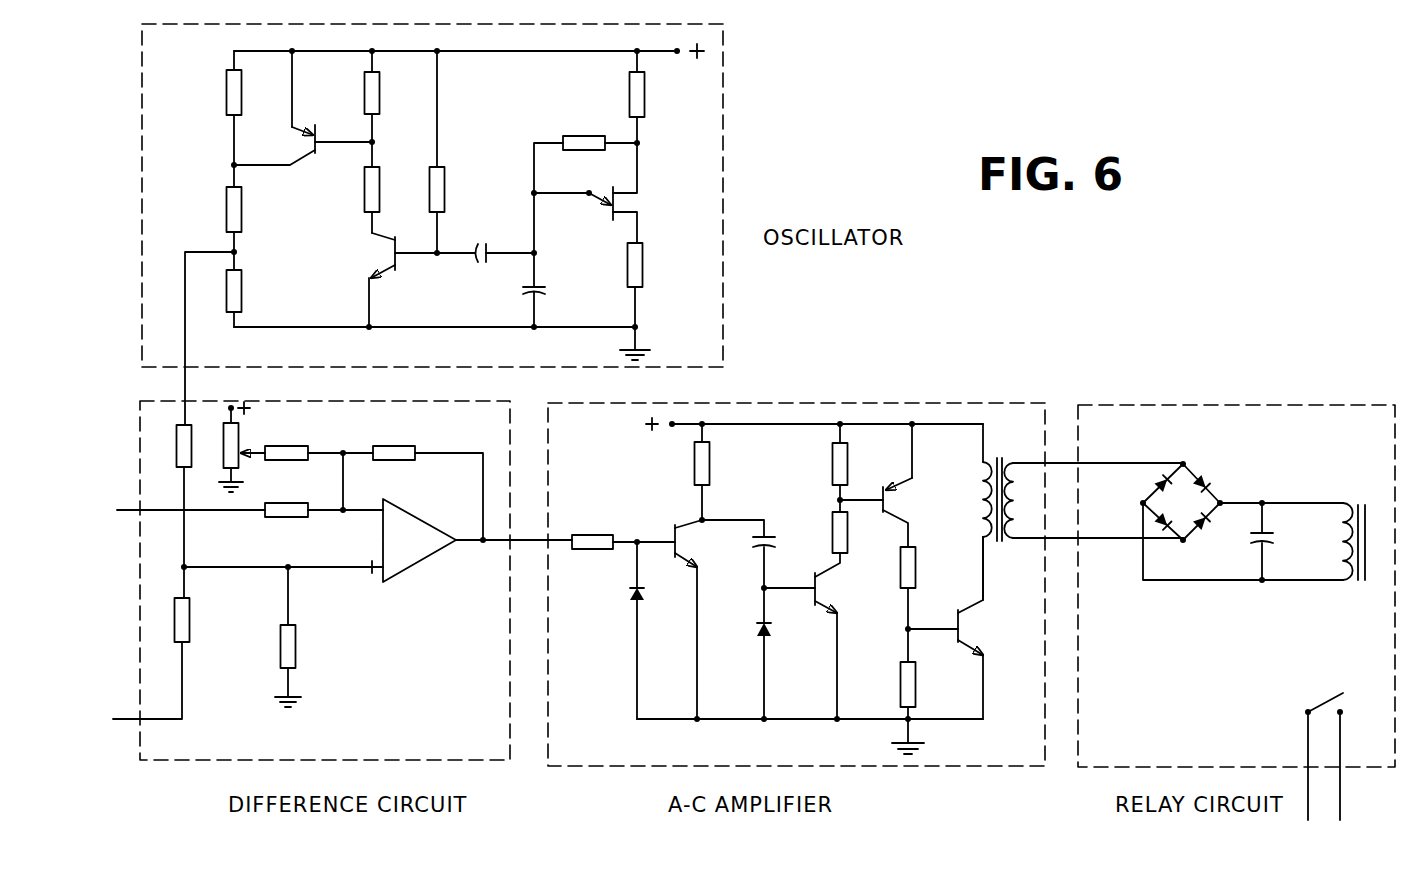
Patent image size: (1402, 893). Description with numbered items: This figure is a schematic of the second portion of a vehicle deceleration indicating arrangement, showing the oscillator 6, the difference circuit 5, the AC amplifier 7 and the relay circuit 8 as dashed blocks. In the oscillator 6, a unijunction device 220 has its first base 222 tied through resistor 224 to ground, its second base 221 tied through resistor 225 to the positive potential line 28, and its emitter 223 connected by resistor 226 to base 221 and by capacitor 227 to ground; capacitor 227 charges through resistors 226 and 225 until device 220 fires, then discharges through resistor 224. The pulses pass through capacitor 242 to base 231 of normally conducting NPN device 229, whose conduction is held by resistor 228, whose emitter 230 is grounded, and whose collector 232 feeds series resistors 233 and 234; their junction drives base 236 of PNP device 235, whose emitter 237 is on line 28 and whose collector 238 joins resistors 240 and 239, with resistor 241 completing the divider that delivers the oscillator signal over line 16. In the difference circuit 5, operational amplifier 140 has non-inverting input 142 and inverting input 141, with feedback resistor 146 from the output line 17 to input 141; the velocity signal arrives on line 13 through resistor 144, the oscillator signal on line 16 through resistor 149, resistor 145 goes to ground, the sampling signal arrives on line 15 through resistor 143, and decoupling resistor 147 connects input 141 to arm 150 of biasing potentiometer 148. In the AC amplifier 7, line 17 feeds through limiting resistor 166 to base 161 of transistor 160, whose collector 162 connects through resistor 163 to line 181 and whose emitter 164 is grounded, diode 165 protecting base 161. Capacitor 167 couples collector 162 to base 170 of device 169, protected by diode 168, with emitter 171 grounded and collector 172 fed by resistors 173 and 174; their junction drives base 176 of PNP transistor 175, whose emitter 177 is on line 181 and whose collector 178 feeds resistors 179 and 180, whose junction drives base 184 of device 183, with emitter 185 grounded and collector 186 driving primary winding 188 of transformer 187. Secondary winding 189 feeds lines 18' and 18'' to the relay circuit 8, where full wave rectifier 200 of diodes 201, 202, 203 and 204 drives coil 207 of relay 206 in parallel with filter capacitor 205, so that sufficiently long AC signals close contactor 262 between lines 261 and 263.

The difference circuit 5 is at (159, 762).
The oscillator 6 is at (726, 218).
The AC amplifier 7 is at (584, 772).
The relay circuit 8 is at (1105, 772).
The line 13 is at (116, 718).
The line 15 is at (118, 507).
The line 16 is at (191, 377).
The line 17 is at (528, 538).
The line 18' is at (1068, 443).
The line 18'' is at (1071, 565).
The line 28 is at (550, 51).
The operational amplifier 140 is at (428, 551).
The inverting input 141 is at (366, 525).
The non-inverting input 142 is at (354, 570).
The resistor 143 is at (278, 518).
The resistor 144 is at (192, 610).
The resistor 145 is at (302, 644).
The feedback resistor 146 is at (386, 444).
The decoupling resistor 147 is at (290, 451).
The potentiometer 148 is at (242, 432).
The resistor 149 is at (170, 434).
The arm 150 is at (256, 458).
The transistor 160 is at (724, 550).
The base 161 is at (672, 528).
The collector 162 is at (686, 524).
The resistor 163 is at (719, 468).
The emitter 164 is at (684, 596).
The diode 165 is at (626, 600).
The limiting resistor 166 is at (598, 548).
The capacitor 167 is at (758, 548).
The diode 168 is at (754, 638).
The transistor 169 is at (864, 604).
The base 170 is at (808, 578).
The emitter 171 is at (830, 608).
The collector 172 is at (828, 580).
The resistor 173 is at (832, 513).
The resistor 174 is at (832, 455).
The PNP transistor 175 is at (936, 510).
The base 176 is at (880, 488).
The emitter 177 is at (900, 482).
The collector 178 is at (898, 518).
The resistor 179 is at (916, 576).
The resistor 180 is at (900, 684).
The line 181 is at (810, 416).
The transistor 183 is at (1010, 640).
The base 184 is at (962, 646).
The emitter 185 is at (972, 652).
The collector 186 is at (968, 614).
The transformer 187 is at (1028, 455).
The primary winding 188 is at (982, 512).
The secondary winding 189 is at (1008, 540).
The full wave rectifier 200 is at (1174, 504).
The diode 201 is at (1156, 485).
The diode 202 is at (1153, 525).
The diode 203 is at (1208, 479).
The diode 204 is at (1206, 529).
The rectifier filter capacitor 205 is at (1276, 544).
The relay 206 is at (1376, 493).
The coil 207 is at (1342, 528).
The unijunction device 220 is at (678, 213).
The second base 221 is at (623, 186).
The first base 222 is at (618, 216).
The emitter 223 is at (594, 200).
The resistor 224 is at (644, 256).
The resistor 225 is at (646, 90).
The resistor 226 is at (576, 136).
The capacitor 227 is at (546, 292).
The resistor 228 is at (444, 178).
The NPN device 229 is at (384, 265).
The emitter 230 is at (384, 272).
The base 231 is at (402, 240).
The collector 232 is at (370, 239).
The resistor 233 is at (362, 200).
The resistor 234 is at (381, 90).
The PNP device 235 is at (315, 137).
The base 236 is at (308, 156).
The emitter 237 is at (302, 124).
The collector 238 is at (299, 168).
The resistor 239 is at (226, 103).
The resistor 240 is at (226, 205).
The resistor 241 is at (242, 284).
The capacitor 242 is at (482, 246).
The line 261 is at (1306, 796).
The contactor 262 is at (1322, 694).
The line 263 is at (1342, 789).